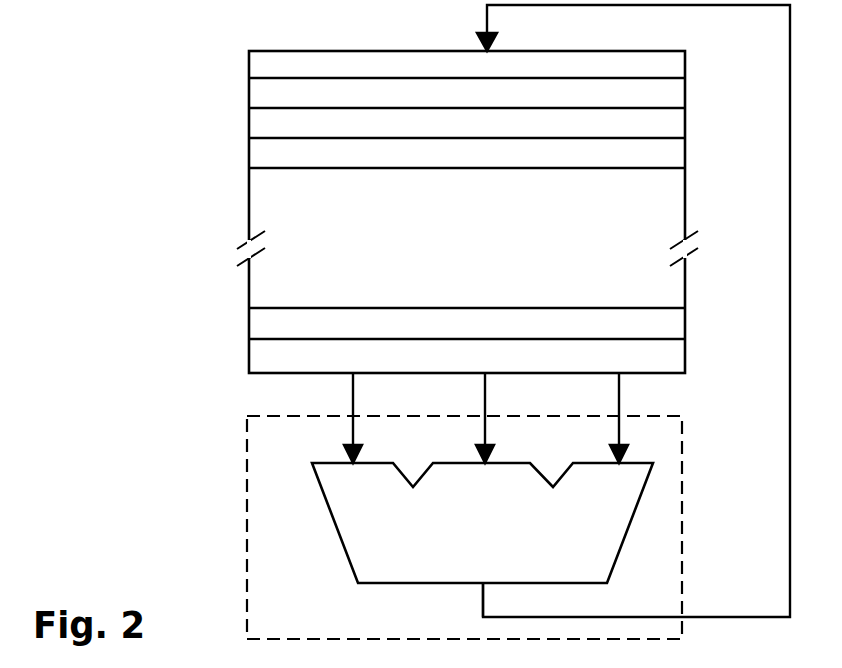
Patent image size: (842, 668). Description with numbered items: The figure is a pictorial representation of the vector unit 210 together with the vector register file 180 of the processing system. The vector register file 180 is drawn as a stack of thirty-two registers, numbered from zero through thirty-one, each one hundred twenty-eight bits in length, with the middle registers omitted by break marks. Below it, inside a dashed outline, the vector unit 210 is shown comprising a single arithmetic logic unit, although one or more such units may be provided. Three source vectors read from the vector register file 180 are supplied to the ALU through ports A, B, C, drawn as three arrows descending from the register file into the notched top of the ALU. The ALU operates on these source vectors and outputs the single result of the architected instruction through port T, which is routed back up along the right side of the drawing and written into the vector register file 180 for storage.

The vector register file 180 is at (473, 290).
The vector unit 210 is at (247, 607).
The port A is at (353, 435).
The port B is at (485, 435).
The port C is at (619, 435).
The port T is at (469, 583).